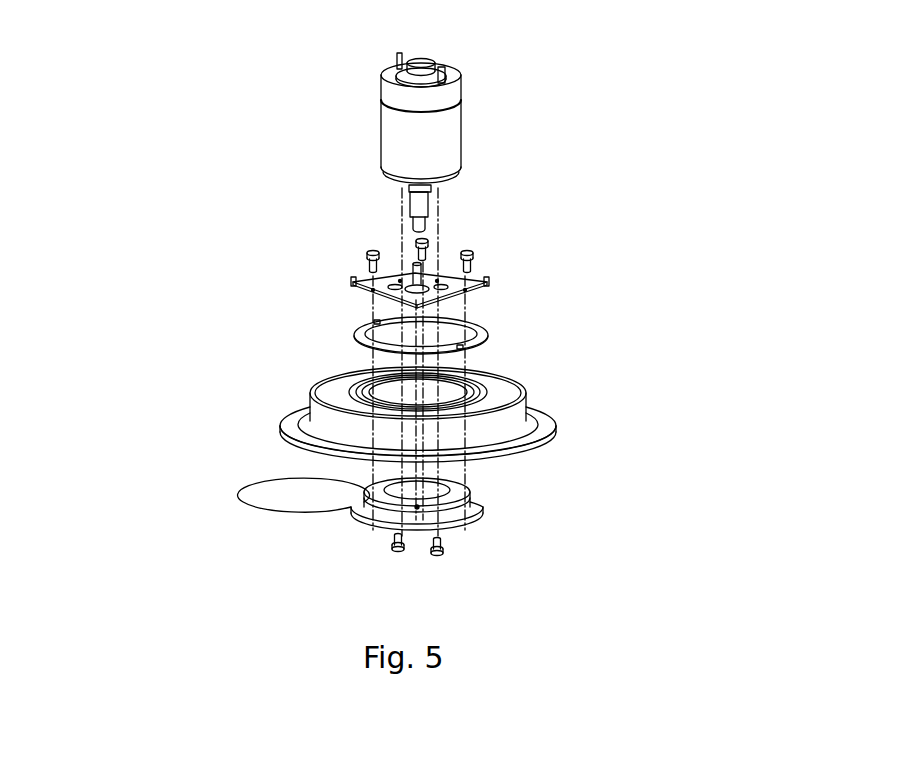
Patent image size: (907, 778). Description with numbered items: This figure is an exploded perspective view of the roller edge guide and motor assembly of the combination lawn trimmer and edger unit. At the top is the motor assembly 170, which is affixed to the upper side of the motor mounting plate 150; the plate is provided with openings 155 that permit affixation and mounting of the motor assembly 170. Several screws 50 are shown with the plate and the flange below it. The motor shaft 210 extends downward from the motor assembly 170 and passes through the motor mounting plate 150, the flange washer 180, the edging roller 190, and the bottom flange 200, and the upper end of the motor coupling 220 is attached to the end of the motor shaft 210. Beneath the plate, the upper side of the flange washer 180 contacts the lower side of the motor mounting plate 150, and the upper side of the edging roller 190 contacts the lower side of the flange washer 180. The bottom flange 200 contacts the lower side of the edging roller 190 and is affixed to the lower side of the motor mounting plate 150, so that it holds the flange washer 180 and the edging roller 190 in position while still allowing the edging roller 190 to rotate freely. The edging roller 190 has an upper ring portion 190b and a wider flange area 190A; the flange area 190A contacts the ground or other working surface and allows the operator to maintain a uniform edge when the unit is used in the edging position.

The motor assembly 170 is at (324, 118).
The motor shaft 210 is at (566, 179).
The motor coupling 220 is at (514, 224).
The screws 50 is at (316, 365).
The motor mounting plate 150 is at (341, 260).
The openings 155 is at (519, 308).
The flange washer 180 is at (301, 311).
The edging roller 190 is at (503, 413).
The ring upper portion 190b is at (600, 399).
The flange area 190A is at (525, 448).
The bottom flange 200 is at (299, 490).